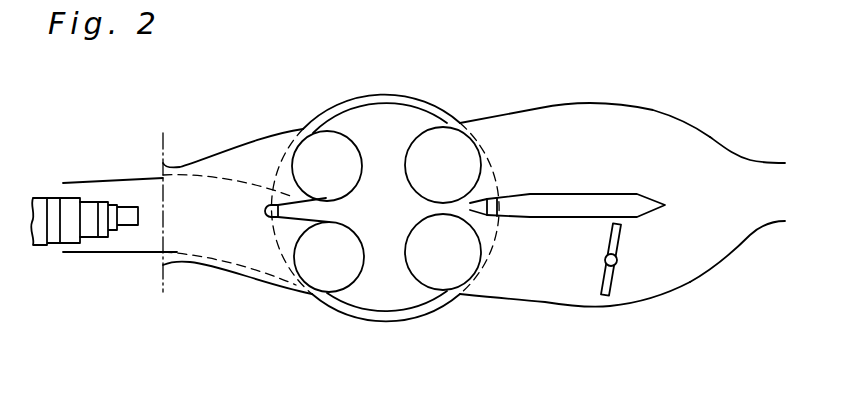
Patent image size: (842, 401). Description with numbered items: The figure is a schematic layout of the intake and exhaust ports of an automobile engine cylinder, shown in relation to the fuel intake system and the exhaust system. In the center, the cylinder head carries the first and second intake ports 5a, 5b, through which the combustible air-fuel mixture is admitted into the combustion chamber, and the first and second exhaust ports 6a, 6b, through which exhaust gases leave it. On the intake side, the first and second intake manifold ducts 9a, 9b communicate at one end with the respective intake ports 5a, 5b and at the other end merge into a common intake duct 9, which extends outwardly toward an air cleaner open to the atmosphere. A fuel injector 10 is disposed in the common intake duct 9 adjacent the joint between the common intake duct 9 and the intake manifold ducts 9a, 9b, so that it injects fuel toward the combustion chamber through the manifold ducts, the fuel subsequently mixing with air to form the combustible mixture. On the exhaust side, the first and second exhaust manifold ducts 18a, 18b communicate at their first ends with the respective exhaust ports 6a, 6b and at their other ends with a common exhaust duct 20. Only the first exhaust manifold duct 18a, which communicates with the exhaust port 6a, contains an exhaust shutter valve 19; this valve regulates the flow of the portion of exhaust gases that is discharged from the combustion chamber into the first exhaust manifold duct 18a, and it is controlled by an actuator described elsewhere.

The fuel injector 10 is at (53, 205).
The common intake duct 9 is at (137, 242).
The second intake manifold duct 9b is at (232, 165).
The first intake manifold duct 9a is at (243, 247).
The second intake port 5b is at (342, 150).
The second exhaust port 6b is at (447, 150).
The first intake port 5a is at (345, 273).
The first exhaust port 6a is at (445, 263).
The second exhaust manifold duct 18b is at (575, 123).
The first exhaust manifold duct 18a is at (578, 282).
The exhaust shutter valve 19 is at (615, 278).
The common exhaust duct 20 is at (765, 208).